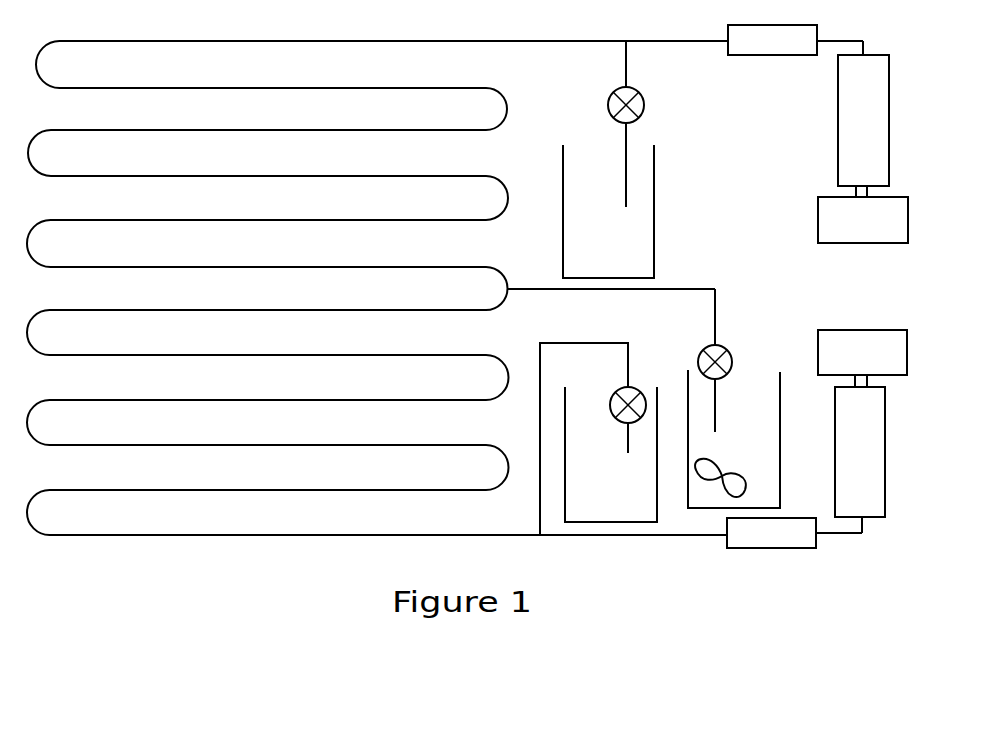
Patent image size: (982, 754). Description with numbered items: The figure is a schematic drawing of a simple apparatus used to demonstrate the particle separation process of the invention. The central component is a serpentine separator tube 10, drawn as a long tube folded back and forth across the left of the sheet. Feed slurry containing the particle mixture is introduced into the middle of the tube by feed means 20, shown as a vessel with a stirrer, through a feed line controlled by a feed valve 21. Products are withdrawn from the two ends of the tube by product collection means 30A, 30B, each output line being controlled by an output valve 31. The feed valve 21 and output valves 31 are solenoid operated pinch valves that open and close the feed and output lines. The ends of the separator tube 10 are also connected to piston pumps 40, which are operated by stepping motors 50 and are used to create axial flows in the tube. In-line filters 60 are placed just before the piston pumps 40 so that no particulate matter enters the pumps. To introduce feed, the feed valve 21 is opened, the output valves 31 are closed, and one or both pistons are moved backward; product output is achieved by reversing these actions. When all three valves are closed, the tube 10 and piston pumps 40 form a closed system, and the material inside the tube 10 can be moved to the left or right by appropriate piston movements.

The separator tube 10 is at (148, 41).
The output valve 31 is at (645, 97).
The product collection means 30A is at (608, 211).
The product collection means 30B is at (611, 454).
The feed valve 21 is at (724, 348).
The feed means 20 is at (792, 278).
The in-line filter 60 is at (795, 286).
The piston pump 40 is at (862, 286).
The stepping motor 50 is at (863, 286).